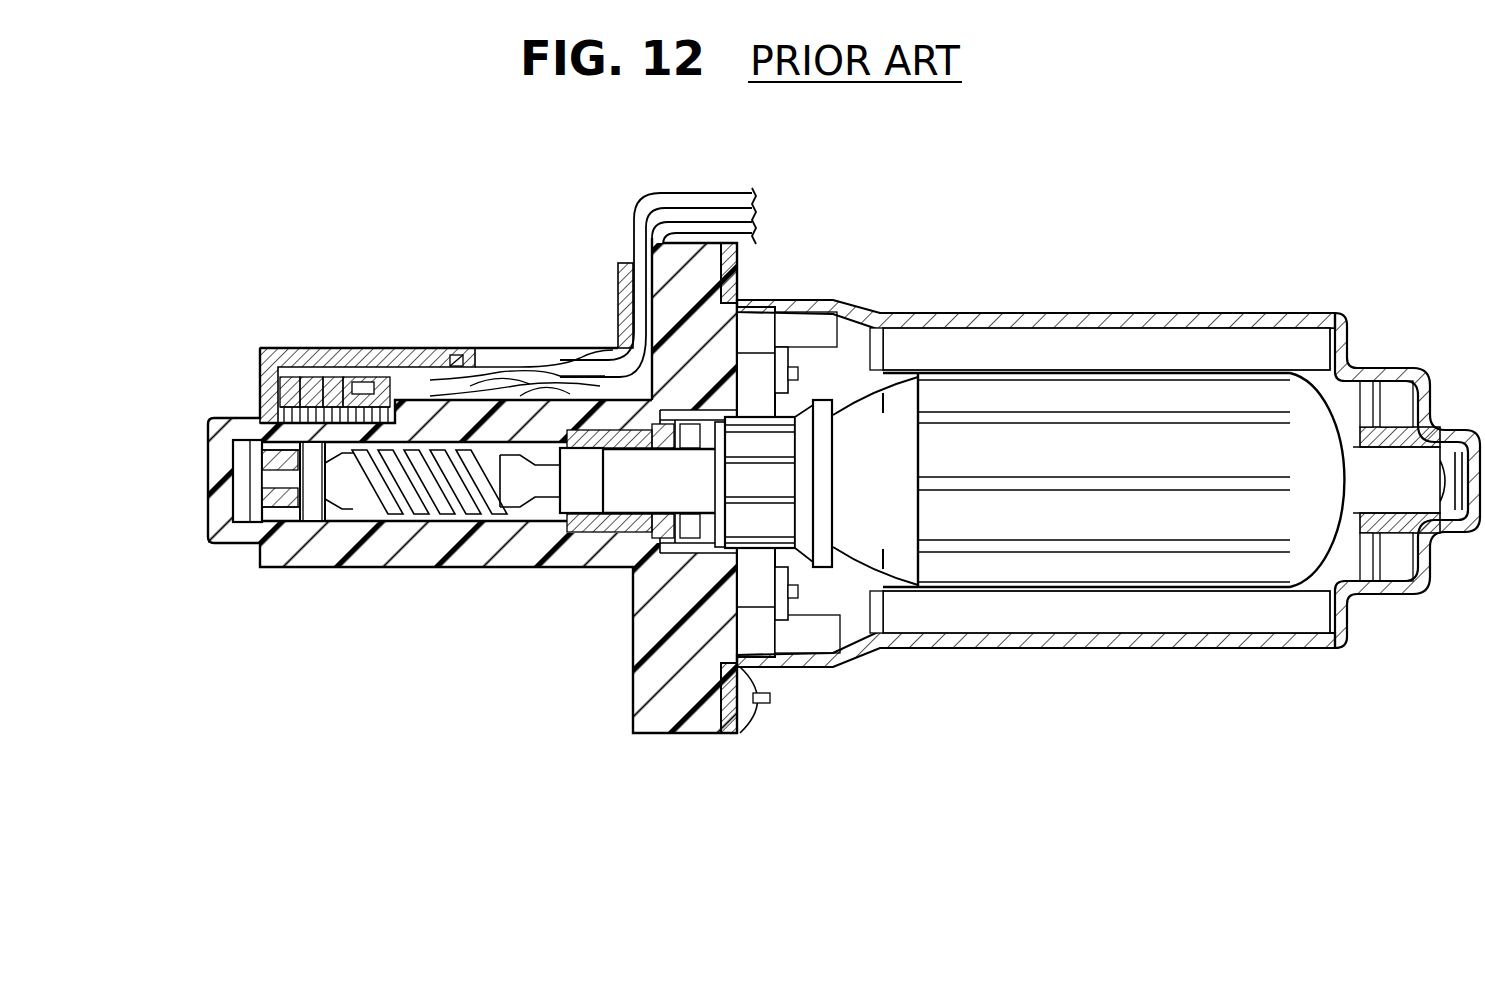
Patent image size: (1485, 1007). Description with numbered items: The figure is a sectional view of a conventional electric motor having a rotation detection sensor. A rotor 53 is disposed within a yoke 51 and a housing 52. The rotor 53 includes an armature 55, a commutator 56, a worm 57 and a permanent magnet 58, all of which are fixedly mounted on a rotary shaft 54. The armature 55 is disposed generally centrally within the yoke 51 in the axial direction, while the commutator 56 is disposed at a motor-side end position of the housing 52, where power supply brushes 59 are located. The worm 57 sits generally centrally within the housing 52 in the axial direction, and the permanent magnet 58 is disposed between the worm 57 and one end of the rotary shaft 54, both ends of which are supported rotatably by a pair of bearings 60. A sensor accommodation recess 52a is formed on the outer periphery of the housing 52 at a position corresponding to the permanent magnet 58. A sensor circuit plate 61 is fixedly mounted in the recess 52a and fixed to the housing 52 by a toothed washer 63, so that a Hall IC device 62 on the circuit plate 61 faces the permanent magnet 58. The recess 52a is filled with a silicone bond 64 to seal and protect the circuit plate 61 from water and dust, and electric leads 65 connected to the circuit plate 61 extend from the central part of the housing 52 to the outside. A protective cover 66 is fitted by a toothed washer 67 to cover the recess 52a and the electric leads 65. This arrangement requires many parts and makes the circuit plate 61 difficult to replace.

The yoke 51 is at (1102, 317).
The housing 52 is at (642, 625).
The sensor accommodation recess 52a is at (282, 392).
The rotor 53 is at (882, 500).
The rotary shaft 54 is at (275, 477).
The armature 55 is at (1133, 523).
The commutator 56 is at (783, 520).
The worm 57 is at (420, 512).
The permanent magnet 58 is at (310, 513).
The power supply brushes 59 is at (763, 407).
The bearings 60 is at (292, 513).
The sensor circuit plate 61 is at (337, 405).
The Hall IC device 62 is at (318, 390).
The toothed washer 63 is at (377, 395).
The silicone bond 64 is at (292, 380).
The electric leads 65 is at (548, 388).
The protective cover 66 is at (490, 388).
The toothed washer 67 is at (458, 356).